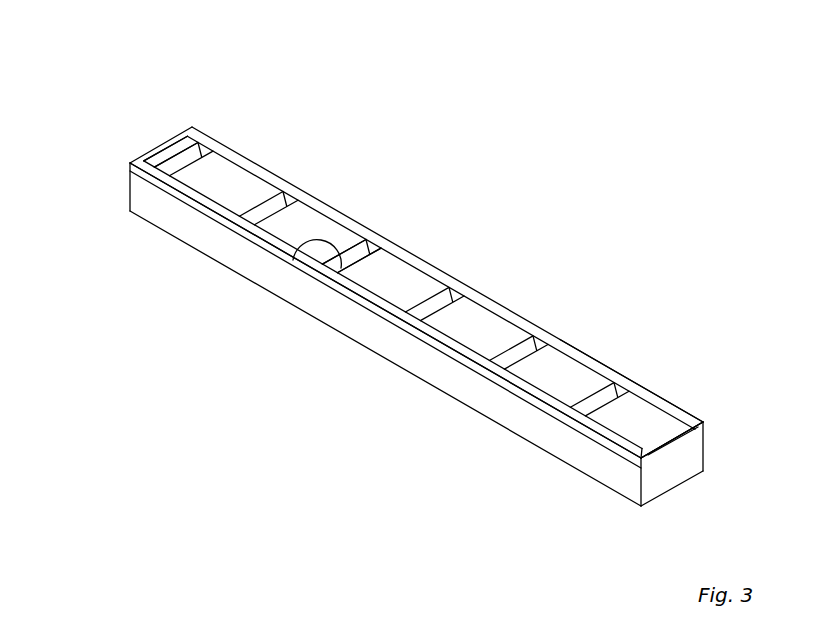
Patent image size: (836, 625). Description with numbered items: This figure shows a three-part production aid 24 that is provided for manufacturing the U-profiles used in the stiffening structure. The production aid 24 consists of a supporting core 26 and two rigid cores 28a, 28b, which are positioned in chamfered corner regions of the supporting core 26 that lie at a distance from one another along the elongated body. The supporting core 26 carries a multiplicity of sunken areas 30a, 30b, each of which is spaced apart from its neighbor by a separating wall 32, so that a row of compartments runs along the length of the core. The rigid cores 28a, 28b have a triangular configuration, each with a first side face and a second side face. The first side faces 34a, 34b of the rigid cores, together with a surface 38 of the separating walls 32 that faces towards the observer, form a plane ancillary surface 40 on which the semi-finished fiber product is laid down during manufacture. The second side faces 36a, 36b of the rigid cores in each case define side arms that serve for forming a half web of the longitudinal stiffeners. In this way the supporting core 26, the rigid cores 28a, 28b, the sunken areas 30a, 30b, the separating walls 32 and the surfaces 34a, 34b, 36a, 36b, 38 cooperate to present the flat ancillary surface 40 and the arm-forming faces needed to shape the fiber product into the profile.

The production aid 24 is at (101, 67).
The supporting core 26 is at (129, 195).
The rigid core 28a is at (130, 163).
The rigid core 28b is at (209, 133).
The sunken area 30a is at (455, 278).
The sunken area 30b is at (374, 237).
The separating wall 32 is at (350, 263).
The first side face 34a is at (460, 344).
The first side face 34b is at (626, 378).
The second side face 36a is at (537, 406).
The second side face 36b is at (706, 422).
The surface 38 is at (308, 250).
The ancillary surface 40 is at (174, 148).